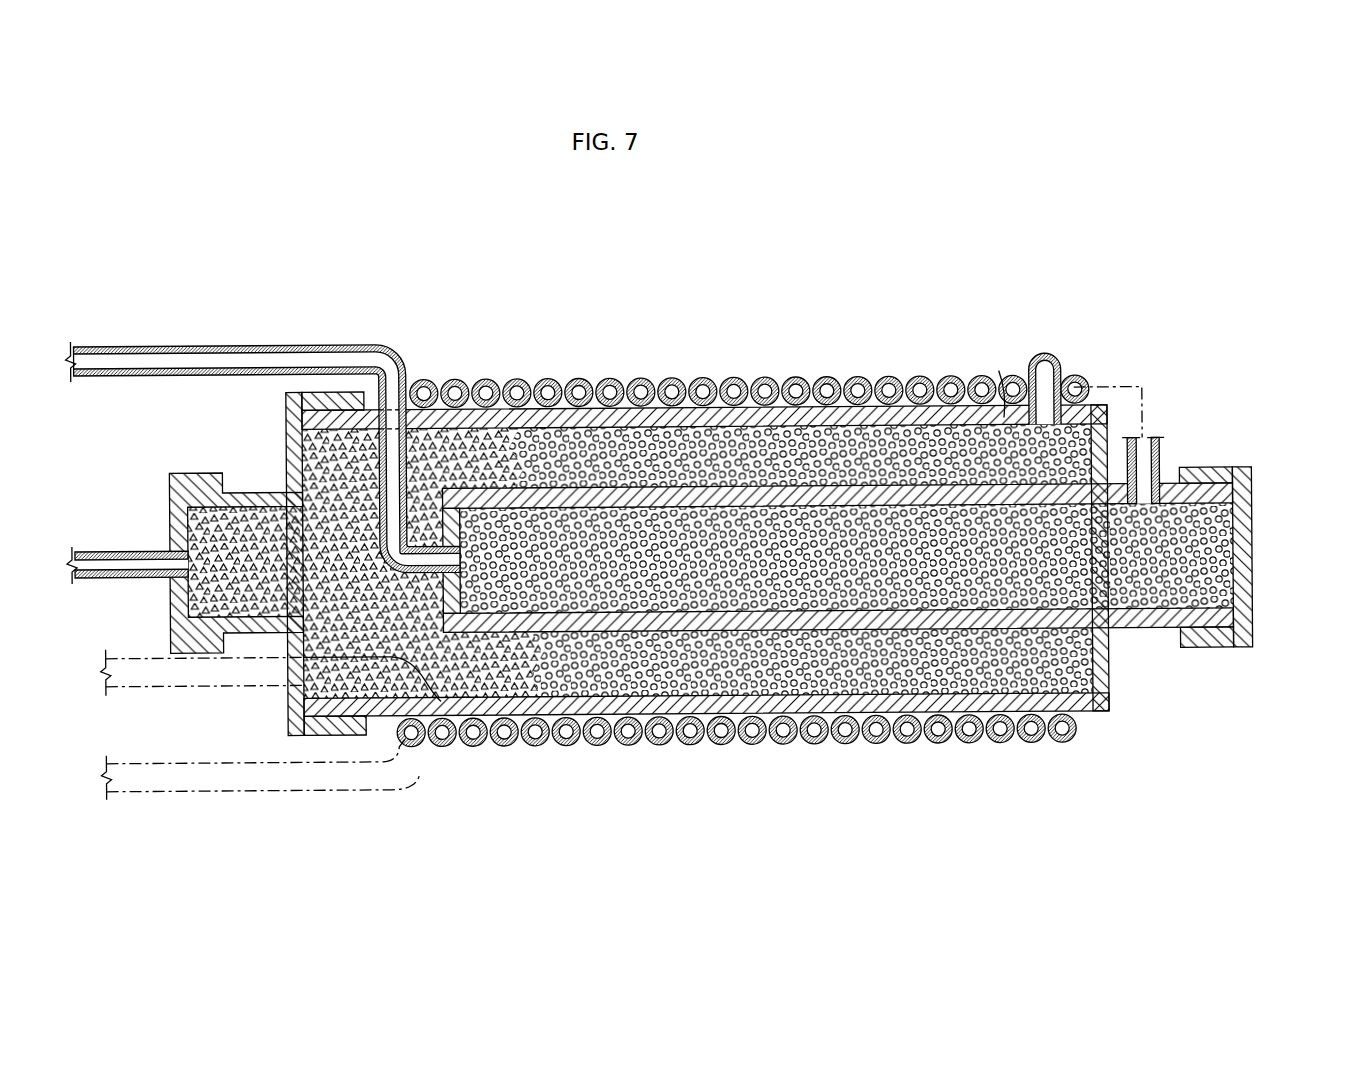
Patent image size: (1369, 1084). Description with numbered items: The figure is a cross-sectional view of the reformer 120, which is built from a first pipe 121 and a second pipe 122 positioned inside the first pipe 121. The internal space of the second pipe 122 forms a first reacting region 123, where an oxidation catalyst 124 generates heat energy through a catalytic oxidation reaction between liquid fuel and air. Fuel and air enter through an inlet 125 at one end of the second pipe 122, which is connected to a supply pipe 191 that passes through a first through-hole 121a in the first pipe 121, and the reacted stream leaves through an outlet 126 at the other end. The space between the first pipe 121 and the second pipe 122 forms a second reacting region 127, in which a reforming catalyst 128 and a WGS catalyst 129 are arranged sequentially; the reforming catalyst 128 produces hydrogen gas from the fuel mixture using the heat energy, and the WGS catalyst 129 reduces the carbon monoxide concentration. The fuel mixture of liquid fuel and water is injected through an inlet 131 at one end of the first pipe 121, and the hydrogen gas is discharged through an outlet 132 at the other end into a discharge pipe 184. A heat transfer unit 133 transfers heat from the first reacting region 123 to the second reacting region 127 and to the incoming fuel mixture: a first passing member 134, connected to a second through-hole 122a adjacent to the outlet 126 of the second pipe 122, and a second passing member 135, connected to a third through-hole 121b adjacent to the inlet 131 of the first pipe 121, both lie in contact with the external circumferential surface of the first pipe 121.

The reformer 120 is at (710, 548).
The first pipe 121 is at (548, 673).
The first through-hole 121a is at (398, 427).
The third through-hole 121b is at (1000, 373).
The second pipe 122 is at (894, 634).
The second through-hole 122a is at (1150, 507).
The first reacting region 123 is at (906, 585).
The oxidation catalyst 124 is at (803, 595).
The inlet 125 is at (424, 598).
The outlet 126 is at (1172, 458).
The second reacting region 127 is at (593, 703).
The reforming catalyst 128 is at (490, 672).
The WGS catalyst 129 is at (430, 650).
The inlet 131 is at (1122, 676).
The outlet 132 is at (156, 511).
The heat transfer unit 133 is at (792, 286).
The first passing member 134 is at (767, 378).
The second passing member 135 is at (733, 378).
The discharge pipe 184 is at (92, 578).
The supply pipe 191 is at (232, 343).